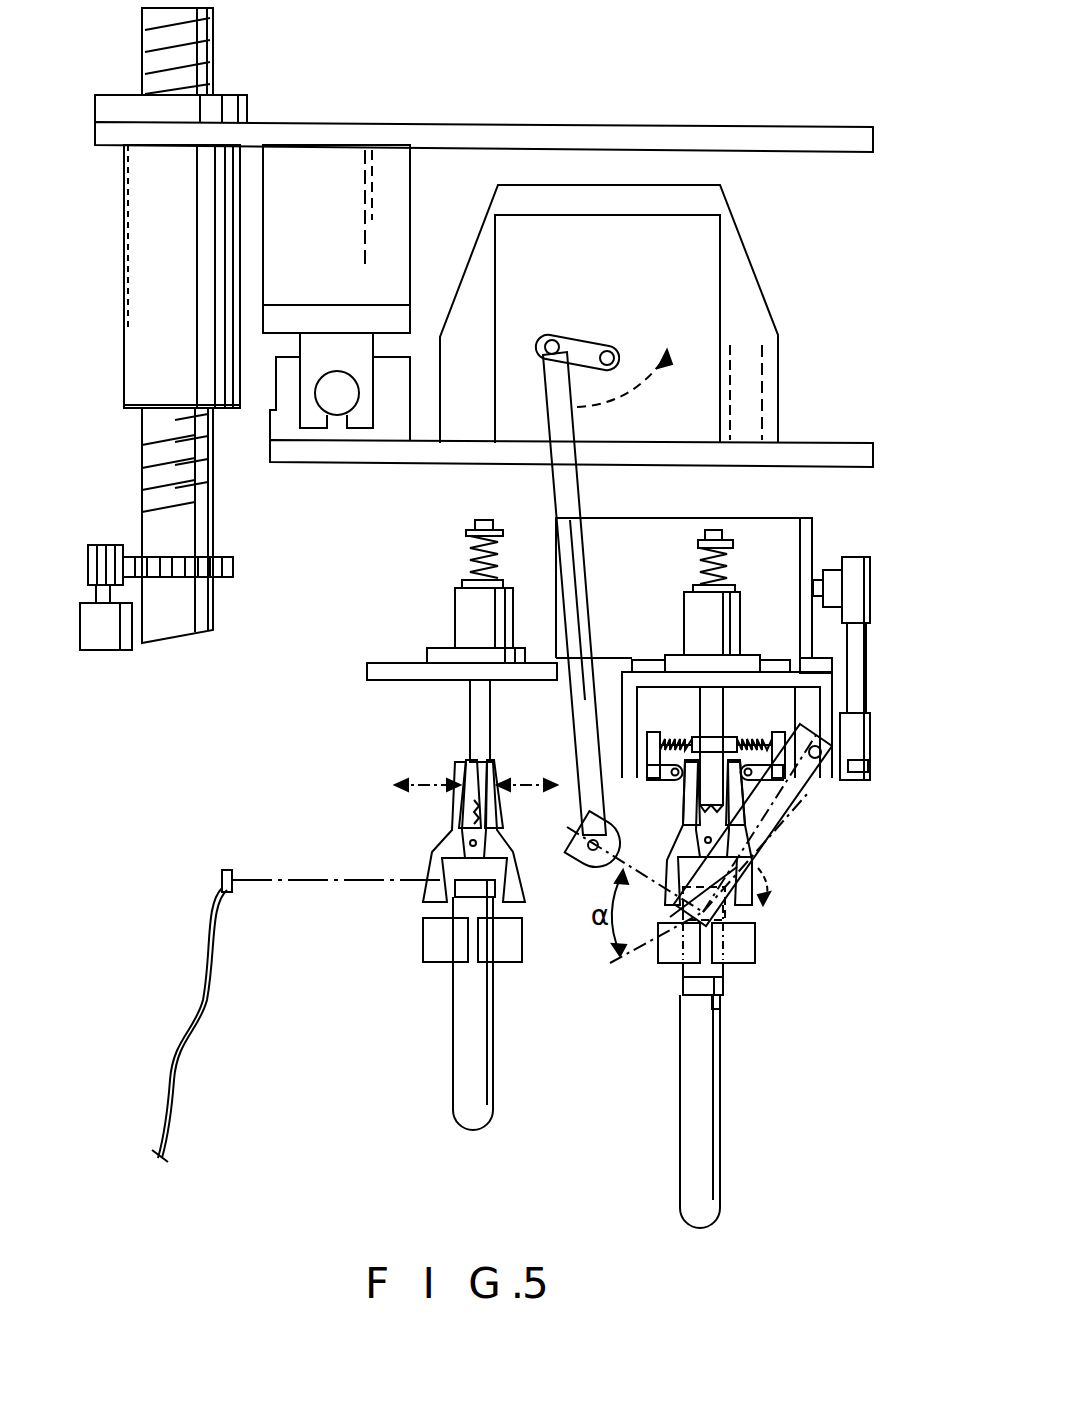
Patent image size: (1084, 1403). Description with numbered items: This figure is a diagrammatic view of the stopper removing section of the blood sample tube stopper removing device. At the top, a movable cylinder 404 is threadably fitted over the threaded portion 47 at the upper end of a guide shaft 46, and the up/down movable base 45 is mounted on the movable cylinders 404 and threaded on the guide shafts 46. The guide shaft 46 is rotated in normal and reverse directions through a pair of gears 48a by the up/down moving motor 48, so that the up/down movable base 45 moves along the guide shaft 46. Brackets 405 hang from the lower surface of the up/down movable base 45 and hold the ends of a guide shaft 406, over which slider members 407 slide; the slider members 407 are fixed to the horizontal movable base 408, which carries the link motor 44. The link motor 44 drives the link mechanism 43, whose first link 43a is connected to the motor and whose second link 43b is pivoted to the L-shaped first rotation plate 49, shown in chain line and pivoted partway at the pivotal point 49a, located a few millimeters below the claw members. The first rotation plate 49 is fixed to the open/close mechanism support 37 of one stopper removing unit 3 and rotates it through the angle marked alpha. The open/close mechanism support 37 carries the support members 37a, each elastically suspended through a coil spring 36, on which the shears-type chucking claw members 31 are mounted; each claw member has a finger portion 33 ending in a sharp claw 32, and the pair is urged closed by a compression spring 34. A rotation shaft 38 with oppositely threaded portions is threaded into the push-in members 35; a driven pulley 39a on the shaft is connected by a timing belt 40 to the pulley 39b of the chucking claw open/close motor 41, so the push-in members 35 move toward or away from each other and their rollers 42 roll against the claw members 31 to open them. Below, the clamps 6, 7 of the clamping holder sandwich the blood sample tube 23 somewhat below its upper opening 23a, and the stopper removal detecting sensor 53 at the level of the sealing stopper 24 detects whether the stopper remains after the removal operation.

The up/down movable base 45 is at (784, 140).
The movable cylinder 404 is at (135, 280).
The bracket 405 is at (405, 200).
The slider member 407 is at (285, 445).
The guide shaft 406 is at (340, 405).
The horizontal movable base 408 is at (818, 455).
The link motor 44 is at (710, 292).
The first link 43a is at (580, 345).
The link mechanism 43 is at (548, 500).
The second link 43b is at (585, 622).
The first rotation plate 49 is at (758, 876).
The pivotal point 49a is at (738, 955).
The guide shaft 46 is at (150, 450).
The threaded portion 47 is at (158, 480).
The gear 48a is at (135, 553).
The up/down moving motor 48 is at (110, 652).
The chucking claw open/close motor 41 is at (750, 530).
The coil spring 36 is at (468, 555).
The open/close mechanism support 37 is at (384, 672).
The support member 37a is at (470, 705).
The rotation shaft 38 is at (712, 738).
The roller 42 is at (670, 782).
The push-in member 35 is at (652, 772).
The compression spring 34 is at (462, 805).
The gripper fingers 33 is at (470, 843).
The chucking claw member 31 is at (432, 835).
The stopper removing unit 3 is at (342, 752).
The sealing stopper 24 is at (462, 882).
The sharp claw 32 is at (440, 900).
The clamp 6 is at (423, 956).
The clamp 7 is at (522, 952).
The blood sample tube 23 is at (453, 1050).
The upper opening 23a is at (720, 1010).
The stopper removal detecting sensor 53 is at (228, 868).
The timing belt 40 is at (855, 650).
The pulley 39b is at (850, 578).
The driven pulley 39a is at (868, 752).